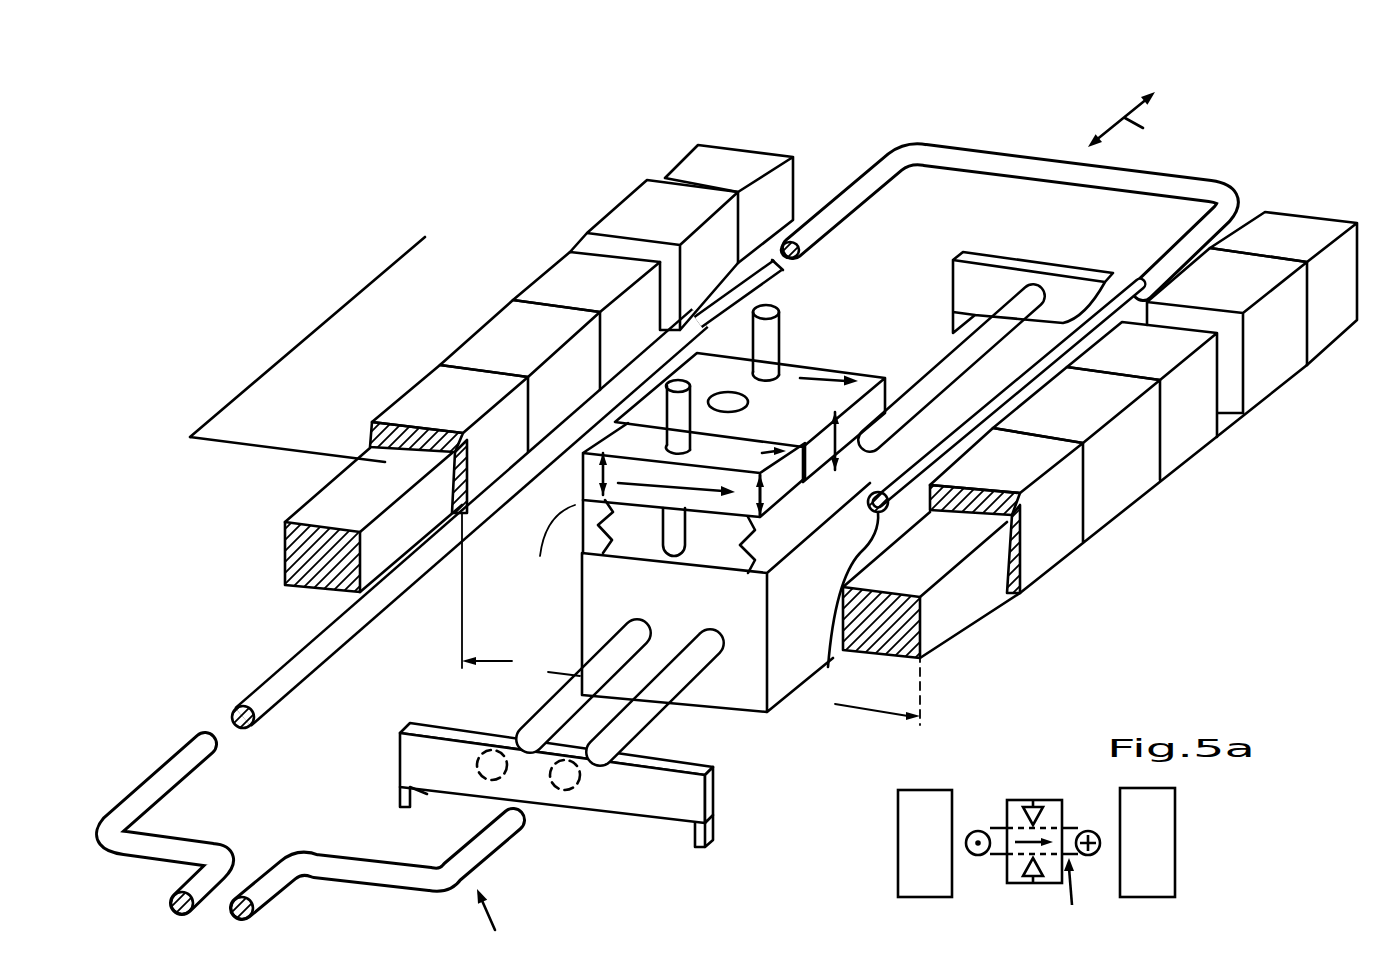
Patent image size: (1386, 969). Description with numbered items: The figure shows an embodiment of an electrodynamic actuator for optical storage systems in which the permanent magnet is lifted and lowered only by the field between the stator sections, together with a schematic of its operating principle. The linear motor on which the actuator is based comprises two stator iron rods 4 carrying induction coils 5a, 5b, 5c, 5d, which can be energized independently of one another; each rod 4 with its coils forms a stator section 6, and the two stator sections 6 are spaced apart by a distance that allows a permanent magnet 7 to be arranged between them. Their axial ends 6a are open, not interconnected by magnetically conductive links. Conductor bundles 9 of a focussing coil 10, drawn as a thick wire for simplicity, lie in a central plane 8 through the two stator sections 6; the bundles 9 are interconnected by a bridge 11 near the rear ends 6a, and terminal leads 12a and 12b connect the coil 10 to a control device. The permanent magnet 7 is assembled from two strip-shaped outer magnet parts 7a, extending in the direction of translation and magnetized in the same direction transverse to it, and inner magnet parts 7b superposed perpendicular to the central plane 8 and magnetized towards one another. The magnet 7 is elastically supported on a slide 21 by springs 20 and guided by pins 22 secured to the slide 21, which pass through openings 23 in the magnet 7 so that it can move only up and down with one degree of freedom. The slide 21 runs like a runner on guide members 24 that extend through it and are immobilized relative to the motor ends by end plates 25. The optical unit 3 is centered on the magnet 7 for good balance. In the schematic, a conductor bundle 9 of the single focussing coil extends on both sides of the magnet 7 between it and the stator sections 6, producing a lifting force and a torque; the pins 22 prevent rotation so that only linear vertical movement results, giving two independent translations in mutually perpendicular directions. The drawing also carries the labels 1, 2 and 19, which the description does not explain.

In FIG. 5, the device 1 is at (1062, 620).
In FIG. 5, the block assembly 2 is at (869, 344).
In FIG. 5, the optical unit 3 is at (1345, 222).
In FIG. 5, the stator iron rod 4 is at (285, 552).
In FIG. 5, the induction coil 5a is at (397, 405).
In FIG. 5, the induction coil 5b is at (487, 327).
In FIG. 5, the induction coil 5c is at (553, 272).
In FIG. 5, the induction coil 5d is at (633, 210).
In FIG. 5, the stator section 6 is at (372, 432).
In FIG. 5A, the stator section 6 is at (922, 880).
In FIG. 5, the axial end 6a is at (742, 148).
In FIG. 5, the permanent magnet 7 is at (870, 378).
In FIG. 5A, the permanent magnet 7 is at (1046, 800).
In FIG. 5, the outer magnet part 7a is at (802, 375).
In FIG. 5, the inner magnet part 7b is at (798, 455).
In FIG. 5, the central plane 8 is at (270, 365).
In FIG. 5, the conductor bundle 9 is at (522, 483).
In FIG. 5A, the conductor bundle 9 is at (977, 830).
In FIG. 5, the focussing coil 10 is at (502, 922).
In FIG. 5A, the focussing coil 10 is at (1071, 896).
In FIG. 5, the bridge 11 is at (978, 155).
In FIG. 5, the terminal lead 12a is at (187, 890).
In FIG. 5, the terminal lead 12b is at (266, 890).
In FIG. 5, the lower plate 19 is at (687, 488).
In FIG. 5, the spring 20 is at (603, 520).
In FIG. 5, the slide 21 is at (803, 663).
In FIG. 5, the pin 22 is at (663, 528).
In FIG. 5, the opening 23 is at (665, 445).
In FIG. 5, the guide member 24 is at (672, 733).
In FIG. 5, the end plate 25 is at (962, 294).